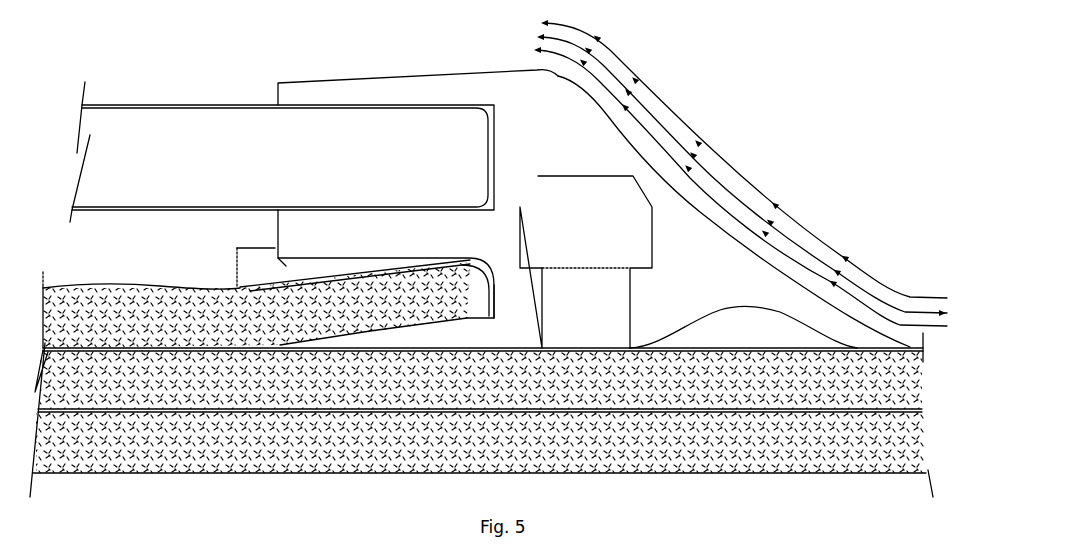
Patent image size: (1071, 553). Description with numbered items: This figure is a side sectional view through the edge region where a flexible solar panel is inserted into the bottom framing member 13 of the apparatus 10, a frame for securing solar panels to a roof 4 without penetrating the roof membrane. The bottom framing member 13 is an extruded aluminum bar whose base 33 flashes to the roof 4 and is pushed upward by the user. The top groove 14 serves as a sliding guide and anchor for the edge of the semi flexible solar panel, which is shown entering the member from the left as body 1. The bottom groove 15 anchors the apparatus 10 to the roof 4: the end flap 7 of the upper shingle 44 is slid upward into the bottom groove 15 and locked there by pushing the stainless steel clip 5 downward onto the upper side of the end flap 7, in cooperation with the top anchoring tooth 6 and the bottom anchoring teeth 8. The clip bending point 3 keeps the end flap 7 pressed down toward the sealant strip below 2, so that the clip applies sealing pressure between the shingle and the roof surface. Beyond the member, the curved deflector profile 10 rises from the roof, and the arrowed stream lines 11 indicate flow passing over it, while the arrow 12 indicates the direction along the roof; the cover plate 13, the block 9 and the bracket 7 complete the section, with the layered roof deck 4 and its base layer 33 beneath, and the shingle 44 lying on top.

The frame body 1 is at (206, 103).
The sealant strip below 2 is at (152, 347).
The clip bending point 3 is at (256, 280).
The roof 4 is at (236, 395).
The stainless steel clip 5 is at (255, 257).
The top anchoring tooth 6 is at (284, 252).
The end flap 7 is at (460, 272).
The bottom anchoring teeth 8 is at (468, 318).
The press element 9 is at (572, 176).
The apparatus 10 is at (556, 77).
The air flow 11 is at (672, 113).
The direction of travel 12 is at (796, 485).
The bottom framing member 13 is at (447, 72).
The top groove 14 is at (498, 150).
The bottom groove 15 is at (497, 302).
The base 33 is at (517, 350).
The upper shingle 44 is at (176, 325).